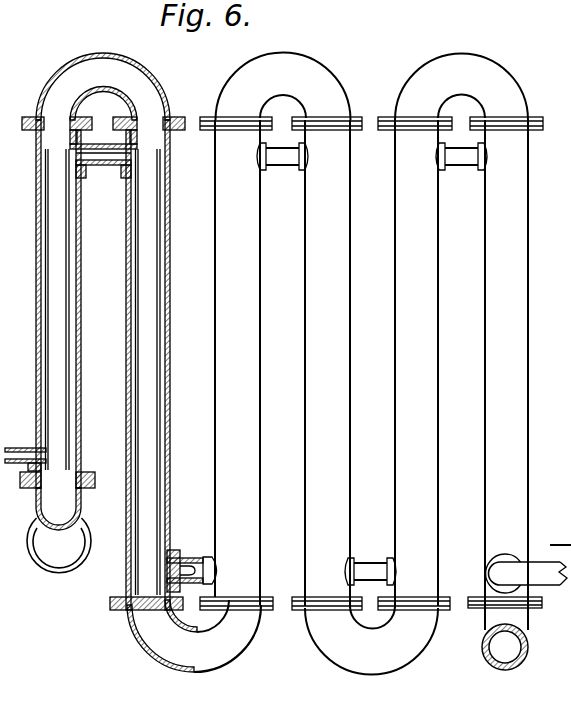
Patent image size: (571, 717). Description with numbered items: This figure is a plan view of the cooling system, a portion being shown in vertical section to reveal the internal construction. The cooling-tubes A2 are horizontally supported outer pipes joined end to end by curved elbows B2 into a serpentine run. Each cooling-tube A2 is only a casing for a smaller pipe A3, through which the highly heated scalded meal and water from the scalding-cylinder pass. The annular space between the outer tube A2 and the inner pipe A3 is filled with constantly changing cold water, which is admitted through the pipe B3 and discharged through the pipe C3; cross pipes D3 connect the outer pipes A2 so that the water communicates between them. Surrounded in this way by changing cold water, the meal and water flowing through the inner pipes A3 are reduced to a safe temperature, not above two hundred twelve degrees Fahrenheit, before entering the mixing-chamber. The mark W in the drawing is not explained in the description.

The cooling-tubes A2 is at (177, 315).
The smaller pipes A3 is at (105, 372).
The curved elbows B2 is at (281, 364).
The cross pipes D3 is at (278, 361).
The discharge pipe C3 is at (25, 448).
The water-admission pipe B3 is at (526, 573).
The water connection W is at (557, 525).